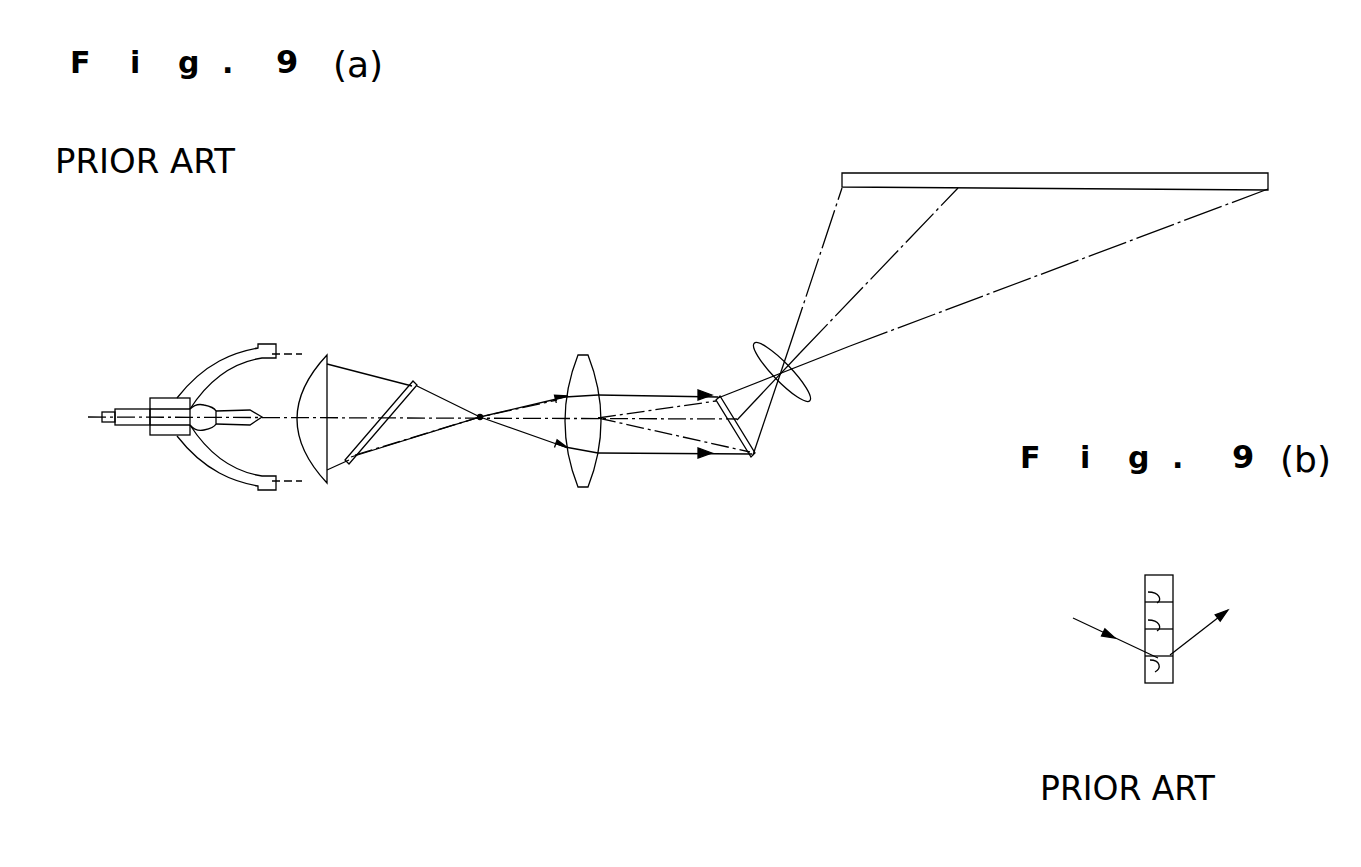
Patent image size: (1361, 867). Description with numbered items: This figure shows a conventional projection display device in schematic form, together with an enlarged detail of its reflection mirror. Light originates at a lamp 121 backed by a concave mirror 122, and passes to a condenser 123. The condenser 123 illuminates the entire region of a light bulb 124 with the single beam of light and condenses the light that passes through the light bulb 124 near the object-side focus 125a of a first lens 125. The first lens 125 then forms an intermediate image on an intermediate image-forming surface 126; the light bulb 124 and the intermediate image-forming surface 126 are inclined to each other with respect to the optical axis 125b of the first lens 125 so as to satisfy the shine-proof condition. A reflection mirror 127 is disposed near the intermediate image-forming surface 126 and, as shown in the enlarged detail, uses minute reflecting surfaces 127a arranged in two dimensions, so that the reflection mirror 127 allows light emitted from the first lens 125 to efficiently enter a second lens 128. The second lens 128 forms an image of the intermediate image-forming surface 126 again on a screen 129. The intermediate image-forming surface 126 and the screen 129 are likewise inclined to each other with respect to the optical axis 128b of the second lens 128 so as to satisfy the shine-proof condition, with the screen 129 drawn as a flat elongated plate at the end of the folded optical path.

In FIG. 9A, the lamp 121 is at (112, 405).
In FIG. 9A, the concave mirror 122 is at (212, 366).
In FIG. 9A, the condenser 123 is at (318, 352).
In FIG. 9A, the light bulb 124 is at (412, 380).
In FIG. 9A, the first lens 125 is at (584, 353).
In FIG. 9A, the object-side focus 125a is at (482, 414).
In FIG. 9A, the optical axis 125b is at (412, 425).
In FIG. 9A, the intermediate image-forming surface 126 is at (722, 396).
In FIG. 9A, the reflection mirror 127 is at (754, 458).
In FIG. 9B, the reflection mirror 127 is at (1176, 590).
In FIG. 9B, the minute reflecting surfaces 127a is at (1148, 620).
In FIG. 9A, the second lens 128 is at (760, 346).
In FIG. 9A, the optical axis 128b is at (847, 307).
In FIG. 9A, the screen 129 is at (842, 182).